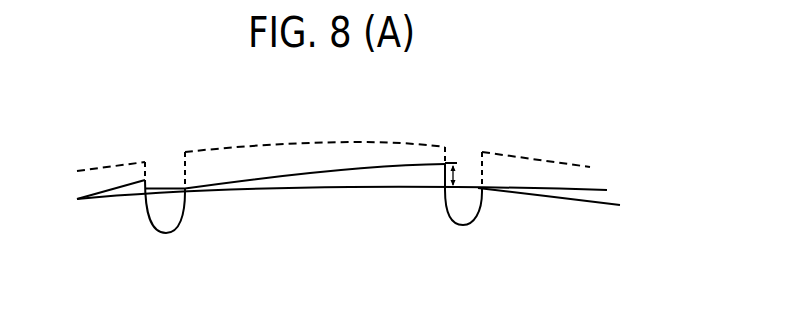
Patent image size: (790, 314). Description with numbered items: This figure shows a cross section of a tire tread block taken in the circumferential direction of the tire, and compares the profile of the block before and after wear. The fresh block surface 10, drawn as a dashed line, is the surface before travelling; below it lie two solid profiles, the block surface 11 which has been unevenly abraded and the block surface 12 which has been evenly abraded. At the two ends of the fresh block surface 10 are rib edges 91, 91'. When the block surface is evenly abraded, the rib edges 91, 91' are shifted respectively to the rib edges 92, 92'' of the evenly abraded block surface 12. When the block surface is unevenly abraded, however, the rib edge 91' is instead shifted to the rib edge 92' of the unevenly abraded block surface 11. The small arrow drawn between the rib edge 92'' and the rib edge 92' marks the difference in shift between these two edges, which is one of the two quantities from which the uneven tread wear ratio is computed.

The fresh block surface 10 is at (257, 143).
The unevenly abraded block surface 11 is at (307, 167).
The evenly abraded block surface 12 is at (322, 188).
The rib edge 91 is at (165, 162).
The rib edge 92 is at (199, 220).
The rib edge 91' is at (451, 156).
The rib edge 92' is at (420, 201).
The rib edge 92'' is at (449, 227).